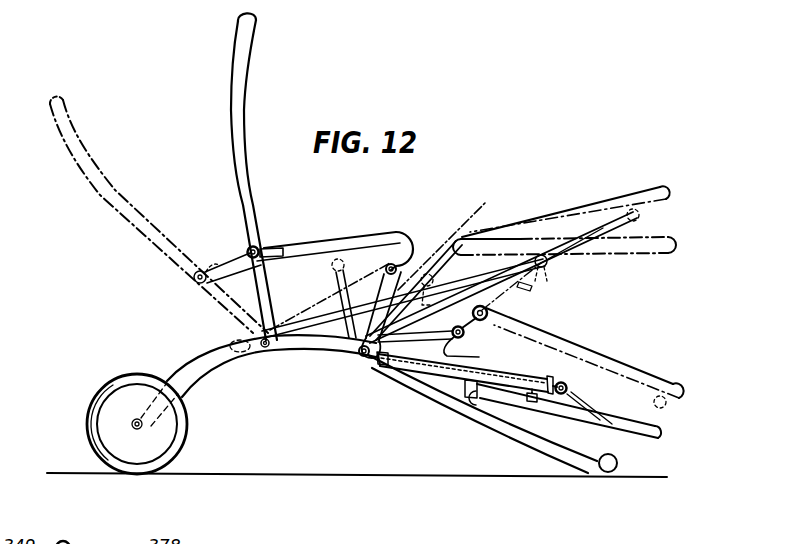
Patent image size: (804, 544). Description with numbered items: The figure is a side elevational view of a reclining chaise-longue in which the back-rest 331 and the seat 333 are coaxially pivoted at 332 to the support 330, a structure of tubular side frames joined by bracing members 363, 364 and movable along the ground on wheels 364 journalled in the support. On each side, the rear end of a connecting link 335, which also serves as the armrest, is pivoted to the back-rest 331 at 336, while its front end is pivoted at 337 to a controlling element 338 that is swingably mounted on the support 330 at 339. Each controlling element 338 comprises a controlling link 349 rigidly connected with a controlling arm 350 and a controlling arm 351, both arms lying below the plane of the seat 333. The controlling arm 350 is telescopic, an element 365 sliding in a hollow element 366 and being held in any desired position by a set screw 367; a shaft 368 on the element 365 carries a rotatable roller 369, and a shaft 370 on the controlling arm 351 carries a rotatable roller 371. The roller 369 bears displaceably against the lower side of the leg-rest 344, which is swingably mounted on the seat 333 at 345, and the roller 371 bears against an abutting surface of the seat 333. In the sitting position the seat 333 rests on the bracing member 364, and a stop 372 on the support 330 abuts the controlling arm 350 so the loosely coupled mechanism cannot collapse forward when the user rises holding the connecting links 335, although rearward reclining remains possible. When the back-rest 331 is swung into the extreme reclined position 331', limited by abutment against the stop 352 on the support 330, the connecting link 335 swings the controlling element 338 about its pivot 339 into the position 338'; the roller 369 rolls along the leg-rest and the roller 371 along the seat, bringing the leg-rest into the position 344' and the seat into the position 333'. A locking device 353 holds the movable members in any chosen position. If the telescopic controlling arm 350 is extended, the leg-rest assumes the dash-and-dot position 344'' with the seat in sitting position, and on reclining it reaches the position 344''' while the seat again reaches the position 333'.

The support 330 is at (200, 378).
The back-rest 331 is at (266, 176).
The extreme reclined position of the back-rest 331' is at (159, 215).
The pivot 332 is at (268, 350).
The seat 333 is at (502, 276).
The reclined position of the seat 333' is at (444, 240).
The connecting link 335 is at (392, 222).
The pivot 336 is at (250, 249).
The pivot 337 is at (396, 265).
The controlling element 338 is at (403, 298).
The swung position of the controlling element 338' is at (330, 296).
The pivot 339 is at (370, 358).
The leg-rest 344 is at (596, 411).
The reclined position of the leg-rest 344' is at (581, 235).
The adjusted sitting position of the leg-rest 344'' is at (581, 357).
The adjusted reclined position of the leg-rest 344''' is at (566, 203).
The pivot 345 is at (530, 289).
The controlling link 349 is at (347, 262).
The controlling arm 350 is at (518, 396).
The controlling arm 351 is at (479, 357).
The stop 352 is at (243, 338).
The locking device 353 is at (278, 249).
The bracing member 363 is at (232, 352).
The bracing member / wheel 364 is at (112, 382).
The element 365 is at (553, 389).
The hollow element 366 is at (538, 378).
The set screw 367 is at (515, 426).
The shaft 368 is at (563, 396).
The roller 369 is at (572, 395).
The shaft 370 is at (446, 337).
The roller 371 is at (461, 336).
The stop 372 is at (464, 394).